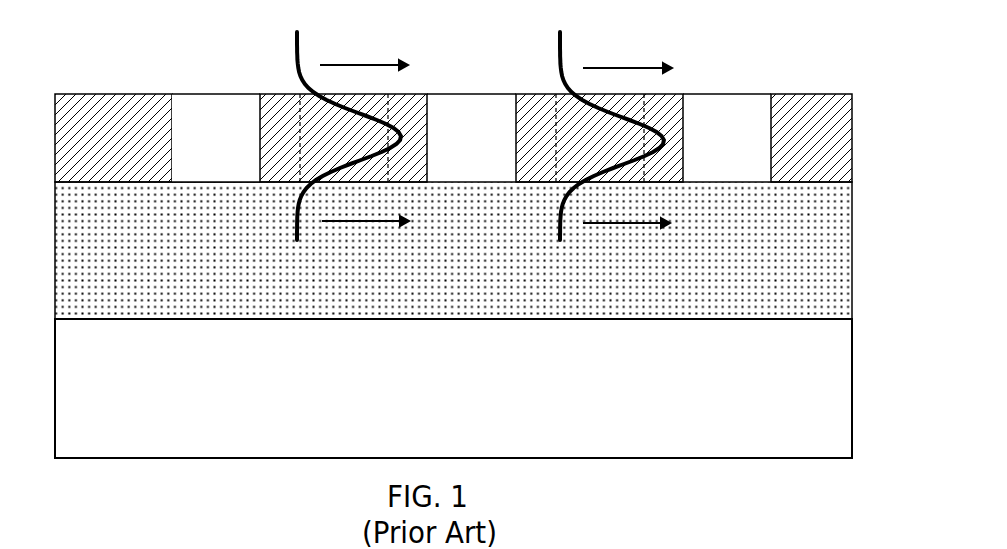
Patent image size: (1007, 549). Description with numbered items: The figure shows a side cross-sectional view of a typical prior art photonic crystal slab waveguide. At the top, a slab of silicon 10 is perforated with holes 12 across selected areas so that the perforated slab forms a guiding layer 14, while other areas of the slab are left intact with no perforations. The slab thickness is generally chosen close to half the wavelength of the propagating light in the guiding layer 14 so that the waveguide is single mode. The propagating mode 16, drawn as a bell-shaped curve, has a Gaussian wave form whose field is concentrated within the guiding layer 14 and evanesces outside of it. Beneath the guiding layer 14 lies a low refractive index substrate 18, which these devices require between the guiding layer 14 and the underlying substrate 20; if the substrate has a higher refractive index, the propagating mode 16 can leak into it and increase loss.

The slab of silicon 10 is at (128, 93).
The holes 12 is at (233, 93).
The guiding layer 14 is at (478, 106).
The propagating mode 16 is at (556, 62).
The low refractive index substrate 18 is at (451, 268).
The underlying substrate 20 is at (450, 396).